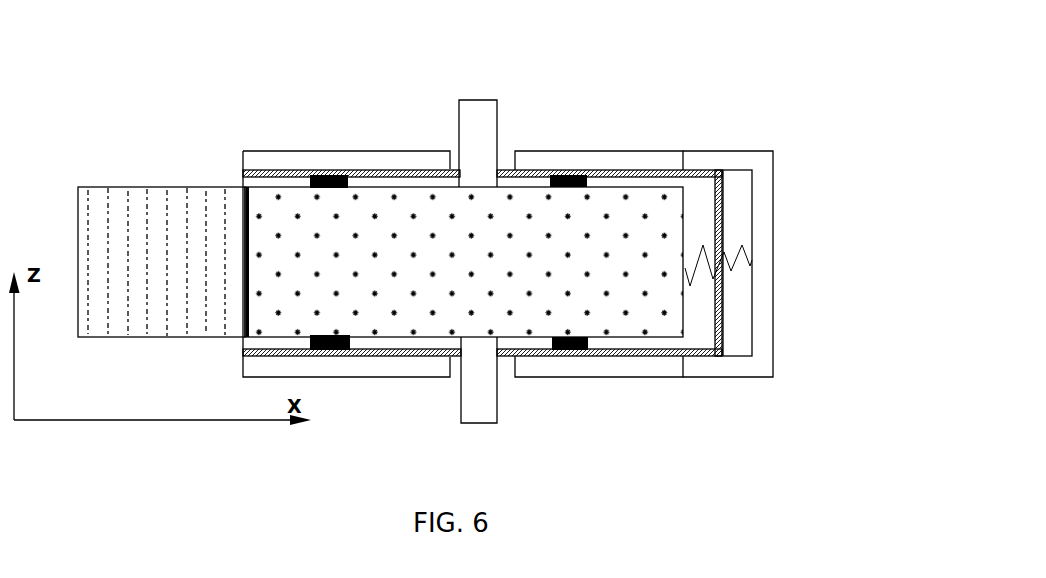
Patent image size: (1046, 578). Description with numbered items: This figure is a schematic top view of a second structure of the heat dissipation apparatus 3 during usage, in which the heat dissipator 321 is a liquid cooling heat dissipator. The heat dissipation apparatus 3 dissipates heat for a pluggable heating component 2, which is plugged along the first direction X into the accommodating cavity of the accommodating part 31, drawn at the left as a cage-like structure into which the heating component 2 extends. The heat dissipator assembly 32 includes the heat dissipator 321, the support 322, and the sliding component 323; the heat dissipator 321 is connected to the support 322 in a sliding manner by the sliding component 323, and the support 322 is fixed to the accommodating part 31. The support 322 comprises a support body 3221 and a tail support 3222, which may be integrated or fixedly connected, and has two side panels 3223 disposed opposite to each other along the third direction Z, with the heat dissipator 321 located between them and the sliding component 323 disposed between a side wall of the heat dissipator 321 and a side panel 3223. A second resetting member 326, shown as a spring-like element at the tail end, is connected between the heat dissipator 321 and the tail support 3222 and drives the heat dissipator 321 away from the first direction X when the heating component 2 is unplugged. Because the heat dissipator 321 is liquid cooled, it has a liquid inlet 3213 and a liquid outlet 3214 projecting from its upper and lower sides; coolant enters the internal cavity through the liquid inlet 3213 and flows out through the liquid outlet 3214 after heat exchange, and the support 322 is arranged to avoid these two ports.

The heating component 2 is at (182, 220).
The heat dissipation apparatus 3 is at (781, 114).
The accommodating part 31 is at (290, 157).
The heat dissipator assembly 32 is at (464, 312).
The heat dissipator 321 is at (353, 313).
The support 322 is at (698, 237).
The support body 3221 is at (615, 175).
The tail support 3222 is at (770, 192).
The side panel 3223 is at (412, 173).
The sliding component 323 is at (582, 177).
The second resetting member 326 is at (738, 260).
The liquid inlet 3213 is at (478, 118).
The liquid outlet 3214 is at (478, 400).